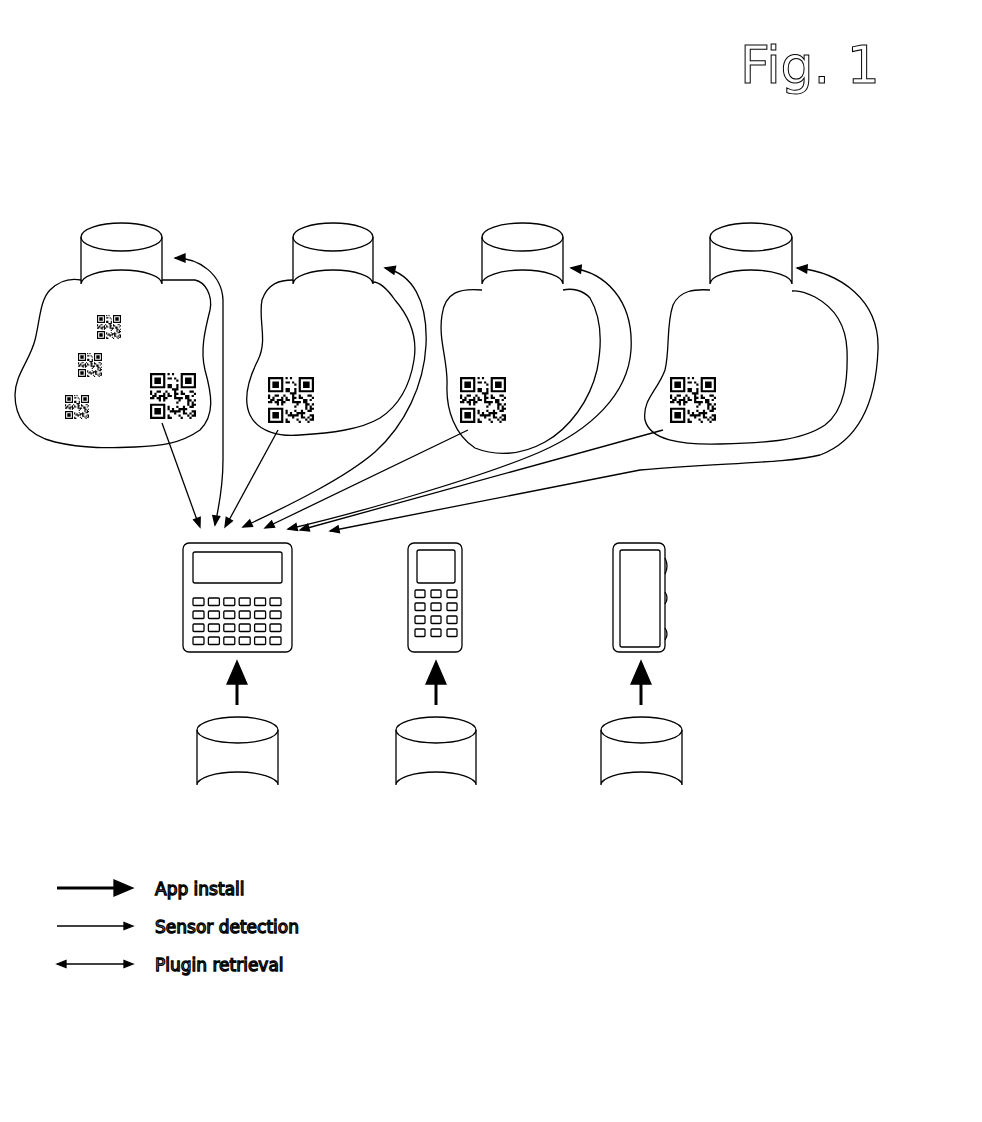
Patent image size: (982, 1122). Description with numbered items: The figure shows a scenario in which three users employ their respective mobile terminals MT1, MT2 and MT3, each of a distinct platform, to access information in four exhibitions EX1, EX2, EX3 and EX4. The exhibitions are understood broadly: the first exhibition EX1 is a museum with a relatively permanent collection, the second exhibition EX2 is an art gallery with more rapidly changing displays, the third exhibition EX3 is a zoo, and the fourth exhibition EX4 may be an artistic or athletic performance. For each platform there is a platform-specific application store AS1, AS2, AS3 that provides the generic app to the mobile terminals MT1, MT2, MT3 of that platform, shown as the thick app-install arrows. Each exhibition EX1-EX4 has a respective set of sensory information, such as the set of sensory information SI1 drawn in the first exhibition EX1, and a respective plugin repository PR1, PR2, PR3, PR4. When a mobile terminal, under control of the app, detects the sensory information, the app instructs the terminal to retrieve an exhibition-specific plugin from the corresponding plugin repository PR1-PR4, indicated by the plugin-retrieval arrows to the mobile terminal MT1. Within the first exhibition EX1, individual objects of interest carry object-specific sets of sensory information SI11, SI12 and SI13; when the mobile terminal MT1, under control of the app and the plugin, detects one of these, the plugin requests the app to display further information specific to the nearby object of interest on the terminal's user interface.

The plugin repository PR1 is at (131, 374).
The plugin repository PR2 is at (334, 375).
The plugin repository PR3 is at (459, 376).
The plugin repository PR4 is at (604, 378).
The exhibition EX1 is at (113, 363).
The exhibition EX2 is at (320, 403).
The exhibition EX3 is at (432, 408).
The exhibition EX4 is at (573, 410).
The set of sensory information SI1 is at (175, 440).
The object-specific set of sensory information SI11 is at (58, 406).
The object-specific set of sensory information SI12 is at (68, 364).
The object-specific set of sensory information SI13 is at (87, 326).
The mobile terminal MT1 is at (213, 597).
The mobile terminal MT2 is at (412, 597).
The mobile terminal MT3 is at (616, 597).
The application store AS1 is at (237, 723).
The application store AS2 is at (436, 723).
The application store AS3 is at (641, 723).